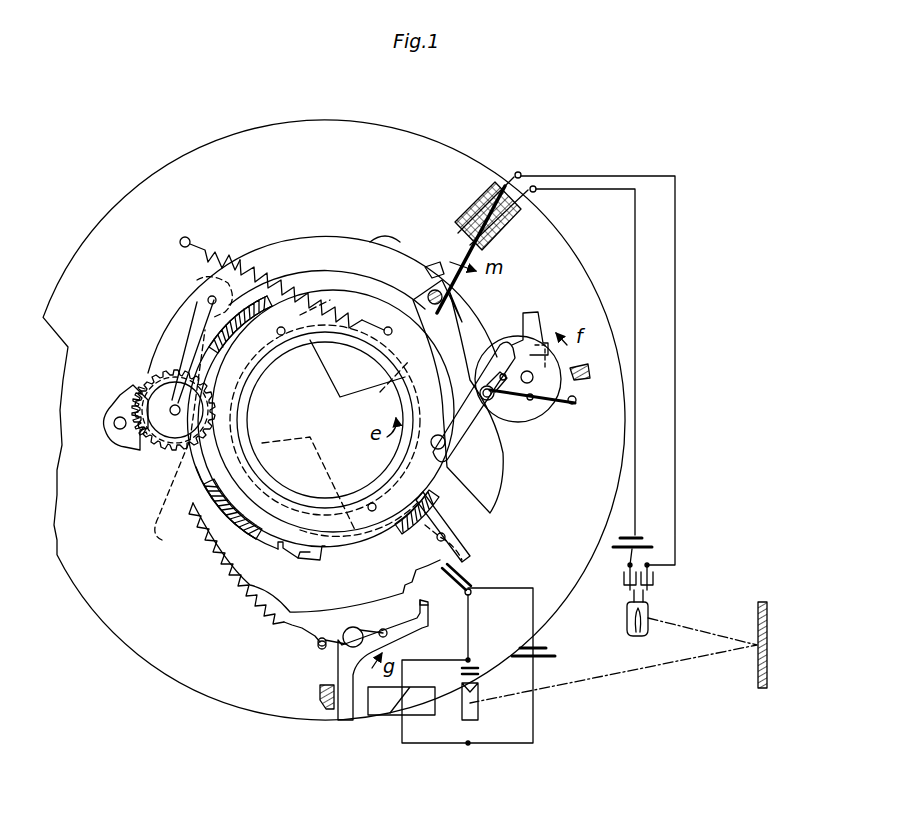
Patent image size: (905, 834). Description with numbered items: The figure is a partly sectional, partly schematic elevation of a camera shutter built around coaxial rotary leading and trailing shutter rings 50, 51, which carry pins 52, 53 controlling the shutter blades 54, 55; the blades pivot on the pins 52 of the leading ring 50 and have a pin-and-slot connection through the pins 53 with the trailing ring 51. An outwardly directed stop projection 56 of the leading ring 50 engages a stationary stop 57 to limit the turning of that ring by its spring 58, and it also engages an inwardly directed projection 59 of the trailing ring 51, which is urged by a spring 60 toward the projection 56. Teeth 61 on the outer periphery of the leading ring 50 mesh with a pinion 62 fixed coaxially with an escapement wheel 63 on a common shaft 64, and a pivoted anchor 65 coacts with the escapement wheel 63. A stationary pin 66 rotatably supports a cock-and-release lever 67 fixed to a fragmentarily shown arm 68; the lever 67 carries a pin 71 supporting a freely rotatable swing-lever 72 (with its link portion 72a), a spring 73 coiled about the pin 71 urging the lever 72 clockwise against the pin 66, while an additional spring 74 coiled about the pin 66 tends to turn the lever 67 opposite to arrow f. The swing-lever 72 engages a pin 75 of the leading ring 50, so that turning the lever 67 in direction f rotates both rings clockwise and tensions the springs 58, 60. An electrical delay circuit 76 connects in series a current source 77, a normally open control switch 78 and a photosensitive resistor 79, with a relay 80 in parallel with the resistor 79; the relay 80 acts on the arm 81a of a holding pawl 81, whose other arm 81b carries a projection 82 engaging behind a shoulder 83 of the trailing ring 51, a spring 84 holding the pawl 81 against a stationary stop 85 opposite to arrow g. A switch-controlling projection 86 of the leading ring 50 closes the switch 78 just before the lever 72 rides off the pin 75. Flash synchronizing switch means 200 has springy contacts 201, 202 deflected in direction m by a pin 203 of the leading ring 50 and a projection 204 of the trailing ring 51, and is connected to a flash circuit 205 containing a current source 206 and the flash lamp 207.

The leading shutter ring 50 is at (332, 290).
The trailing shutter ring 51 is at (283, 250).
The pins 52 is at (283, 335).
The pins 53 is at (208, 300).
The shutter blade 54 is at (352, 528).
The shutter blade 55 is at (302, 288).
The stop projection 56 is at (313, 550).
The stationary stop 57 is at (410, 520).
The spring 58 is at (230, 258).
The inwardly directed projection 59 is at (290, 543).
The spring 60 is at (253, 590).
The teeth 61 is at (195, 338).
The pinion 62 is at (160, 385).
The escapement wheel 63 is at (153, 447).
The common shaft 64 is at (173, 414).
The anchor 65 is at (112, 407).
The stationary pin 66 is at (525, 365).
The cock-and-release lever 67 is at (493, 350).
The arm 68 is at (537, 325).
The pin 71 is at (500, 400).
The swing-lever 72 is at (463, 417).
The link 72a is at (533, 397).
The spring 73 is at (535, 418).
The additional spring 74 is at (568, 395).
The pin 75 is at (420, 505).
The circuit 76 is at (533, 623).
The current source 77 is at (540, 649).
The control switch 78 is at (470, 575).
The photosensitive resistor 79 is at (475, 740).
The relay 80 is at (381, 705).
The holding pawl 81 is at (347, 665).
The arm 81a is at (343, 703).
The arm 81b is at (413, 625).
The projection 82 is at (440, 603).
The shoulder 83 is at (403, 587).
The spring 84 is at (322, 632).
The stationary stop 85 is at (322, 700).
The switch-controlling projection 86 is at (490, 513).
The switch means 200 is at (452, 213).
The springy contact 201 is at (450, 282).
The springy contact 202 is at (443, 257).
The pin 203 is at (420, 297).
The projection 204 is at (395, 248).
The electrical circuit 205 is at (637, 247).
The source of current 206 is at (634, 534).
The flash lamp 207 is at (647, 637).